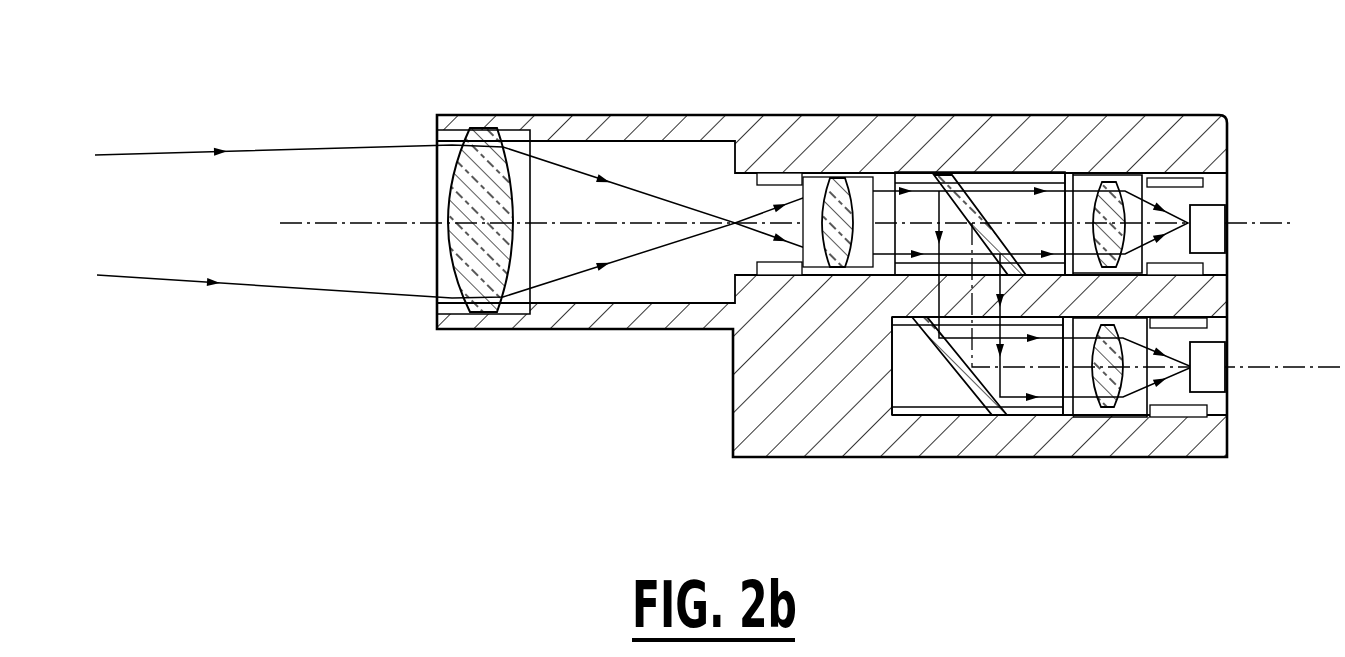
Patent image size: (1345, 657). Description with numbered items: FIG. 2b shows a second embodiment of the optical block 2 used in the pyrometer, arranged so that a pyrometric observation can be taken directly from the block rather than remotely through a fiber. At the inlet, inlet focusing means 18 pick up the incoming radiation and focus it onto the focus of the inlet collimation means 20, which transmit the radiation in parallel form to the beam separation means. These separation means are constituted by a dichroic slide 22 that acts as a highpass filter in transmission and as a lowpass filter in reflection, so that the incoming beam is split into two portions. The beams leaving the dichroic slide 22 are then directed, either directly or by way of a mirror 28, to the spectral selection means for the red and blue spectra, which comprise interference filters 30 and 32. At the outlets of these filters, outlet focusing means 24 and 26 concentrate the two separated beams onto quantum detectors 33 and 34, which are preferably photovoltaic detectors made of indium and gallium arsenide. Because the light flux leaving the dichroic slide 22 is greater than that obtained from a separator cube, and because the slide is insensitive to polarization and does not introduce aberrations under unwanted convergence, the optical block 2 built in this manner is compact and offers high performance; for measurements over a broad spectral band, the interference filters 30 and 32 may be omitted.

The optical block 2 is at (757, 96).
The inlet focusing means 18 is at (480, 157).
The inlet collimation means 20 is at (837, 178).
The dichroic slide 22 is at (963, 200).
The outlet focusing means 24 is at (1127, 200).
The outlet focusing means 26 is at (1105, 400).
The mirror 28 is at (950, 367).
The interference filter 30 is at (1083, 200).
The interference filter 32 is at (1077, 420).
The quantum detector 33 is at (1210, 217).
The quantum detector 34 is at (1208, 355).